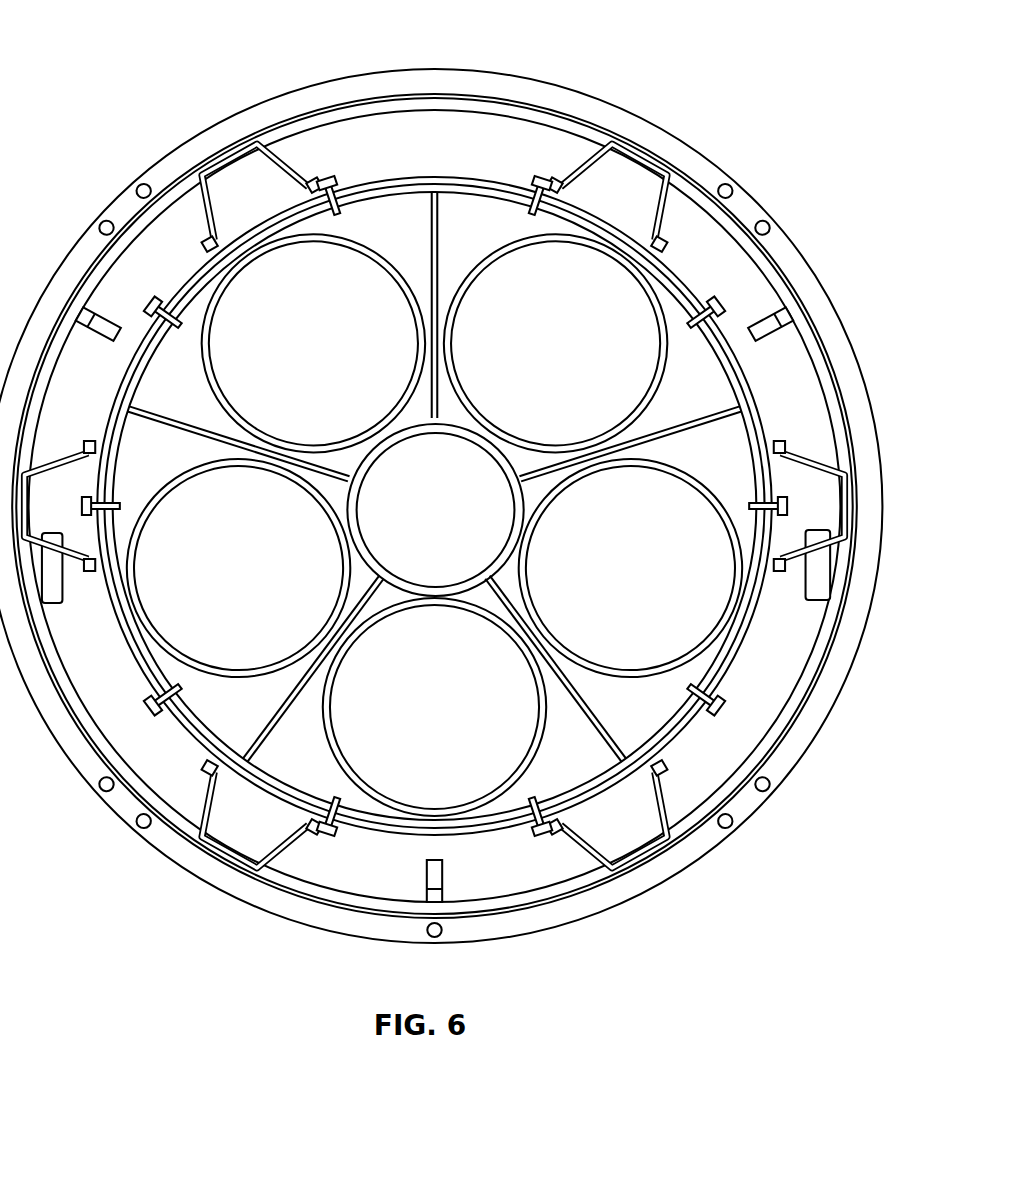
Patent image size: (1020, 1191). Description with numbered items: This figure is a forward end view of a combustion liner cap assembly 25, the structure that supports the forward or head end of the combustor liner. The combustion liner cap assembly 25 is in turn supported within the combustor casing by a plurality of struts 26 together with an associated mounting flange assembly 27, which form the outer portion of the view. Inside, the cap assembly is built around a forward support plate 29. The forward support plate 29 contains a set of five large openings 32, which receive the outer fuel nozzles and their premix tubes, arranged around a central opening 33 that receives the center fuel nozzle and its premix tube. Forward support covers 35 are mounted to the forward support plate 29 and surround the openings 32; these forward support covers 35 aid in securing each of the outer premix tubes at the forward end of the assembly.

The combustion liner cap assembly 25 is at (114, 40).
The struts 26 is at (657, 232).
The mounting flange assembly 27 is at (668, 143).
The forward support plate 29 is at (684, 425).
The openings 32 is at (356, 258).
The openings 33 is at (421, 562).
The forward support covers 35 is at (481, 203).